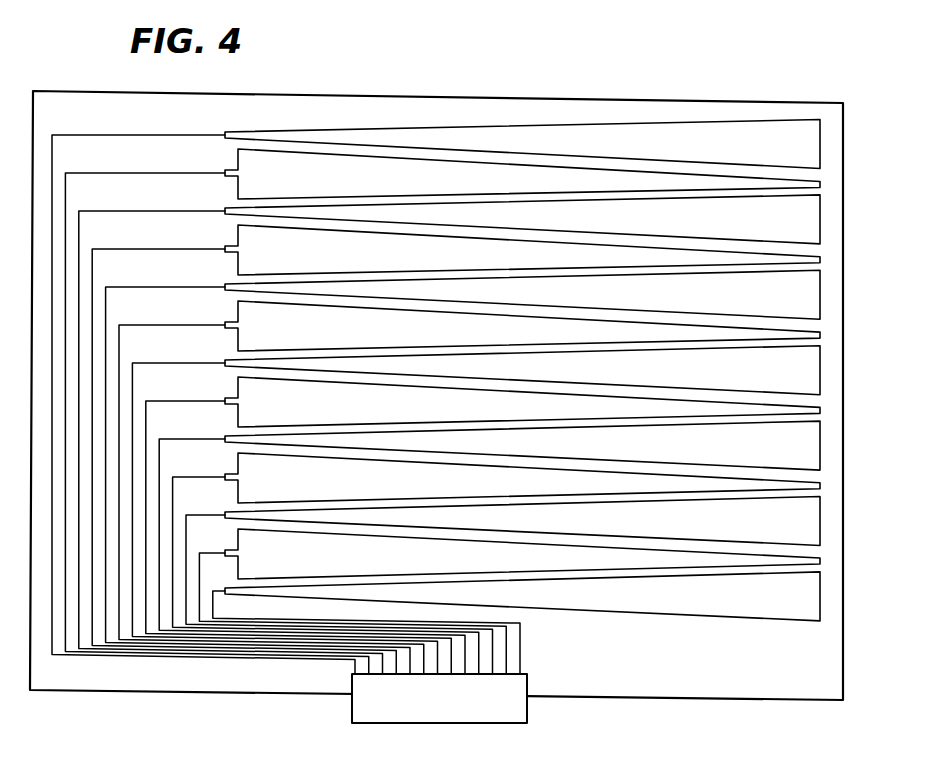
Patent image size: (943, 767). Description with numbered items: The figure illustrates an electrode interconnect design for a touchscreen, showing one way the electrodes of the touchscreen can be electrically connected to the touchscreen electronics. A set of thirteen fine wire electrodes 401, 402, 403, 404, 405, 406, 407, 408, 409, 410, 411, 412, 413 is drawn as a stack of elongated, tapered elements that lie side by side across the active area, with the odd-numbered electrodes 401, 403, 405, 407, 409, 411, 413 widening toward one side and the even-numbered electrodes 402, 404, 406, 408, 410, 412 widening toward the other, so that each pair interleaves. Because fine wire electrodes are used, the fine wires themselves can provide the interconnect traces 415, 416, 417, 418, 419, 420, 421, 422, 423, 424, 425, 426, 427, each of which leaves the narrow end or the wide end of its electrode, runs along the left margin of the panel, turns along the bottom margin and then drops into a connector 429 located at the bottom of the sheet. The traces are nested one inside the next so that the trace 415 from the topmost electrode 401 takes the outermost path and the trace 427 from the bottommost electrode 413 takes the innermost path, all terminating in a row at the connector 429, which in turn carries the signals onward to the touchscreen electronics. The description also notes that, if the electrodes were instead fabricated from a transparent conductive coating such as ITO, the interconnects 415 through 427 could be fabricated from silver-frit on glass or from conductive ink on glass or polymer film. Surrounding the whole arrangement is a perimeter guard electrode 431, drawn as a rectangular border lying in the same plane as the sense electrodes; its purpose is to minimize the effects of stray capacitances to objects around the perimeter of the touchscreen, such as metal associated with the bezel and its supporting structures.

The fine wire electrode 401 is at (728, 122).
The fine wire electrode 402 is at (340, 195).
The fine wire electrode 403 is at (728, 197).
The fine wire electrode 404 is at (340, 271).
The fine wire electrode 405 is at (728, 273).
The fine wire electrode 406 is at (340, 347).
The fine wire electrode 407 is at (728, 348).
The fine wire electrode 408 is at (340, 423).
The fine wire electrode 409 is at (728, 424).
The fine wire electrode 410 is at (340, 499).
The fine wire electrode 411 is at (728, 499).
The fine wire electrode 412 is at (340, 575).
The fine wire electrode 413 is at (728, 574).
The interconnect trace 415 is at (103, 135).
The interconnect trace 416 is at (114, 173).
The interconnect trace 417 is at (124, 211).
The interconnect trace 418 is at (133, 249).
The interconnect trace 419 is at (139, 287).
The interconnect trace 420 is at (141, 325).
The interconnect trace 421 is at (158, 363).
The interconnect trace 422 is at (160, 401).
The interconnect trace 423 is at (165, 439).
The interconnect trace 424 is at (213, 477).
The interconnect trace 425 is at (208, 503).
The interconnect trace 426 is at (220, 552).
The interconnect trace 427 is at (218, 592).
The connector 429 is at (412, 710).
The perimeter guard electrode 431 is at (111, 689).